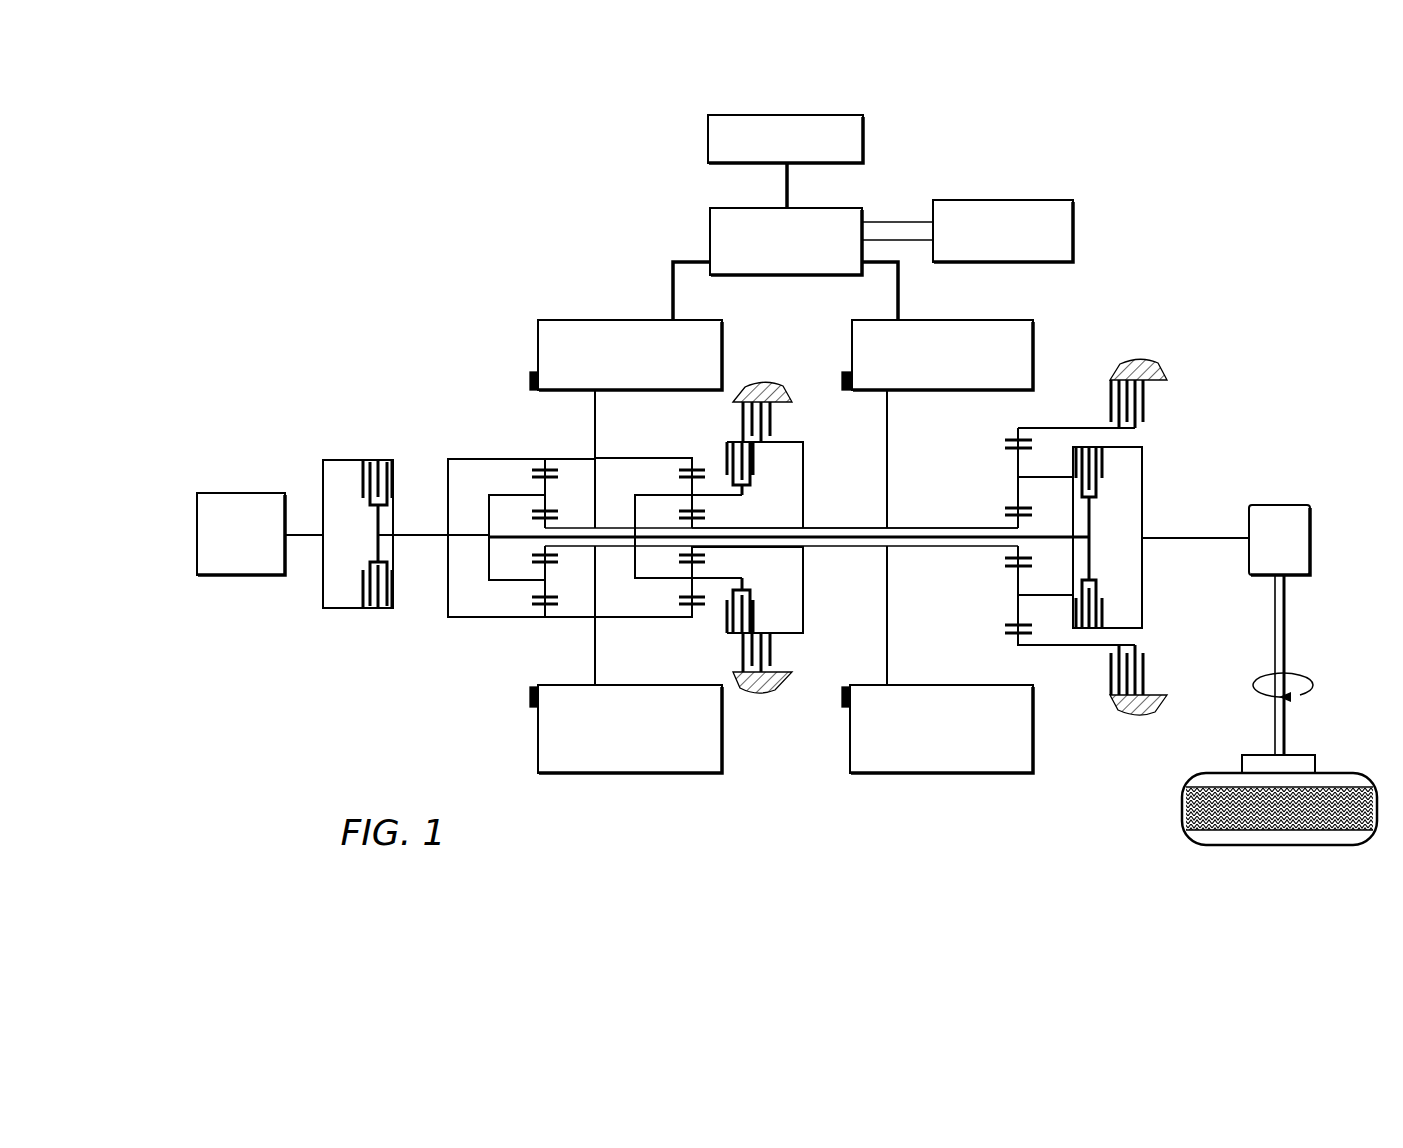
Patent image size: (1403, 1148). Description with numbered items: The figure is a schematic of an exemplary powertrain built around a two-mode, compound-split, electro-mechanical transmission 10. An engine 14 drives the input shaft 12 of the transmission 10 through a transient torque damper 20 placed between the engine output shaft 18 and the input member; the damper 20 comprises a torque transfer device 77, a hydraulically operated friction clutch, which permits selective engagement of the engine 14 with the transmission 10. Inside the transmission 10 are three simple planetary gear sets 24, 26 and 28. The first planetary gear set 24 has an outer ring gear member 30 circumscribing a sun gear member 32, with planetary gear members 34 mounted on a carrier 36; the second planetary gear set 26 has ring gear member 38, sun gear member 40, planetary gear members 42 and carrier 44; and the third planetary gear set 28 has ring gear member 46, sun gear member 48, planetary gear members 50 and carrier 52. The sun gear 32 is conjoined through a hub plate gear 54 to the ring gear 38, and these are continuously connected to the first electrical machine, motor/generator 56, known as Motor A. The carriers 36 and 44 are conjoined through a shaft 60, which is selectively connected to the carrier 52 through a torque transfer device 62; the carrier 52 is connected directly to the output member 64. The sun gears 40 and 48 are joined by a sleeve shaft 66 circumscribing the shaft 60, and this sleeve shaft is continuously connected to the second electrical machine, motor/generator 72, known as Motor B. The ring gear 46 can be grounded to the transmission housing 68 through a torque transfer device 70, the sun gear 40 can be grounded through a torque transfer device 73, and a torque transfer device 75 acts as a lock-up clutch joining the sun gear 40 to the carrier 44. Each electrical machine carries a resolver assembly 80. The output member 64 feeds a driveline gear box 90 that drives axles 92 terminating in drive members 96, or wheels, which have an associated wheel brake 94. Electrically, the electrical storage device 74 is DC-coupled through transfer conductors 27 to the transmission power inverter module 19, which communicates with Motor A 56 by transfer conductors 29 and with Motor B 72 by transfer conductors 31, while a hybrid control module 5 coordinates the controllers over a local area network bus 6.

The hybrid control module 5 is at (708, 143).
The local area network bus 6 is at (786, 196).
The transmission 10 is at (501, 268).
The input shaft 12 is at (432, 533).
The engine 14 is at (244, 493).
The output shaft 18 is at (307, 533).
The transmission power inverter module 19 is at (710, 232).
The transient torque damper 20 is at (358, 503).
The first planetary gear set 24 is at (521, 526).
The second planetary gear set 26 is at (678, 533).
The transfer conductors 27 is at (900, 222).
The third planetary gear set 28 is at (1034, 519).
The transfer conductors 29 is at (673, 302).
The outer ring gear member 30 is at (552, 469).
The transfer conductors 31 is at (898, 290).
The inner sun gear member 32 is at (550, 512).
The planetary gear members 34 is at (543, 490).
The carrier 36 is at (488, 545).
The outer ring gear member 38 is at (696, 469).
The inner sun gear member 40 is at (696, 523).
The planetary gear members 42 is at (690, 487).
The carrier 44 is at (633, 547).
The outer ring gear member 46 is at (1005, 447).
The inner sun gear member 48 is at (1006, 525).
The planetary gear members 50 is at (1013, 455).
The carrier 52 is at (1143, 527).
The hub plate gear 54 is at (597, 528).
The motor/generator 56 is at (540, 335).
The shaft 60 is at (862, 537).
The torque transfer device 62 is at (1113, 486).
The output member 64 is at (1245, 538).
The sleeve shaft 66 is at (838, 528).
The transmission housing 68 is at (757, 385).
The torque transfer device 70 is at (1106, 393).
The motor/generator 72 is at (1033, 321).
The torque transfer device 73 is at (778, 431).
The electrical storage device 74 is at (1075, 200).
The torque transfer device 75 is at (762, 473).
The torque transfer device 77 is at (361, 488).
The resolver assembly 80 is at (533, 378).
The gear box 90 is at (1248, 562).
The vehicular axles 92 is at (1288, 647).
The wheel brake 94 is at (1316, 765).
The drive members 96 is at (1181, 805).